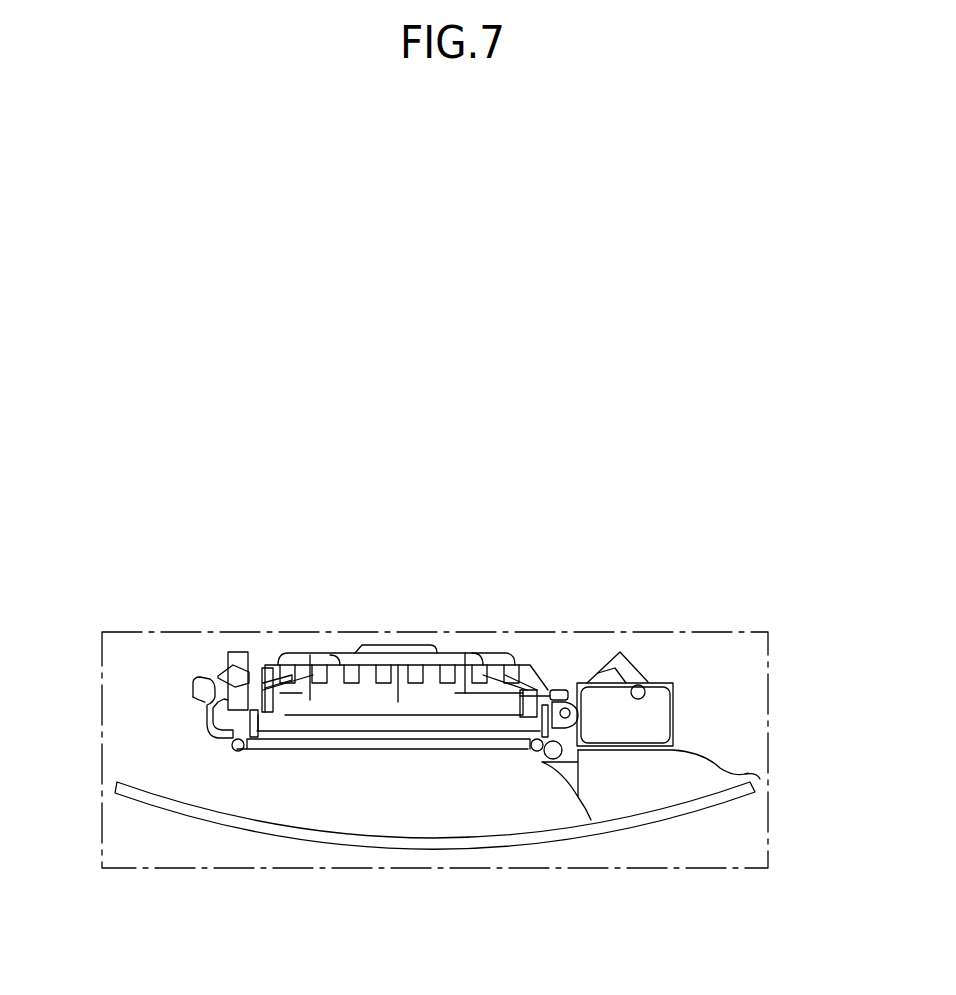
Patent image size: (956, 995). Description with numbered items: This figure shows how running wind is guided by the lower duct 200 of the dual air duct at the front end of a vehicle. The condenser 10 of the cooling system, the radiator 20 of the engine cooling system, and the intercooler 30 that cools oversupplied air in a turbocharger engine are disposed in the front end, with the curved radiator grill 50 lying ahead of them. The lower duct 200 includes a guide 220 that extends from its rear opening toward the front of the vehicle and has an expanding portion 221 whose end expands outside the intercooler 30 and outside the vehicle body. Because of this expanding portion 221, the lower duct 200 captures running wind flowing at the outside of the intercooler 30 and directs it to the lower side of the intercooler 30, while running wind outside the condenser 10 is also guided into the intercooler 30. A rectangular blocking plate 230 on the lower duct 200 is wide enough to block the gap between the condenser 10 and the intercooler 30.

The condenser 10 is at (290, 743).
The radiator 20 is at (358, 727).
The intercooler 30 is at (655, 697).
The radiator grill 50 is at (140, 795).
The lower duct 200 is at (673, 820).
The guide 220 is at (672, 788).
The expanding portion 221 is at (760, 777).
The blocking plate 230 is at (557, 780).